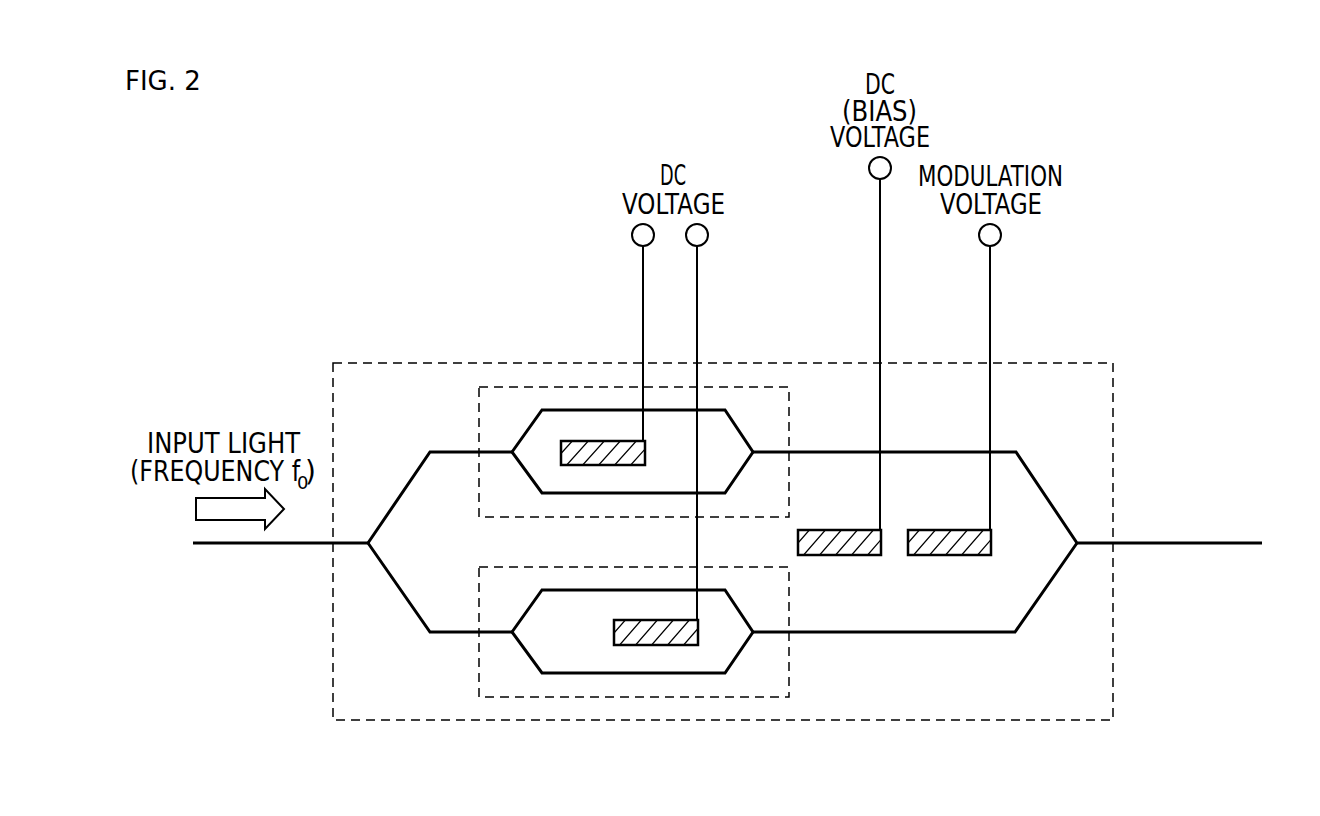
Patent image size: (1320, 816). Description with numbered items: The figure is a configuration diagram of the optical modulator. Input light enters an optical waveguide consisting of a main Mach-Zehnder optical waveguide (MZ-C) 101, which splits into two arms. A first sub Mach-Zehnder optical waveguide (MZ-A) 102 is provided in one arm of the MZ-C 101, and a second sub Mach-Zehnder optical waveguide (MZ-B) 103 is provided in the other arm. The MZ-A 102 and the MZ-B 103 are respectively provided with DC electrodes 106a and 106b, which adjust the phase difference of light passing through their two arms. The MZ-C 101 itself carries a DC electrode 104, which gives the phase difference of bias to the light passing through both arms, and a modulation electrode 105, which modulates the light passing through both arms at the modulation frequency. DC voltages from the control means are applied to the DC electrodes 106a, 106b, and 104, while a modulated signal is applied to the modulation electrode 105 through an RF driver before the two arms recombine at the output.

The main Mach-Zehnder optical waveguide (MZ-C) 101 is at (1113, 663).
The first sub Mach-Zehnder optical waveguide (MZ-A) 102 is at (479, 413).
The second sub Mach-Zehnder optical waveguide (MZ-B) 103 is at (479, 670).
The DC electrode 104 is at (858, 556).
The modulation electrode 105 is at (968, 556).
The DC electrode 106a is at (591, 440).
The DC electrode 106b is at (653, 646).